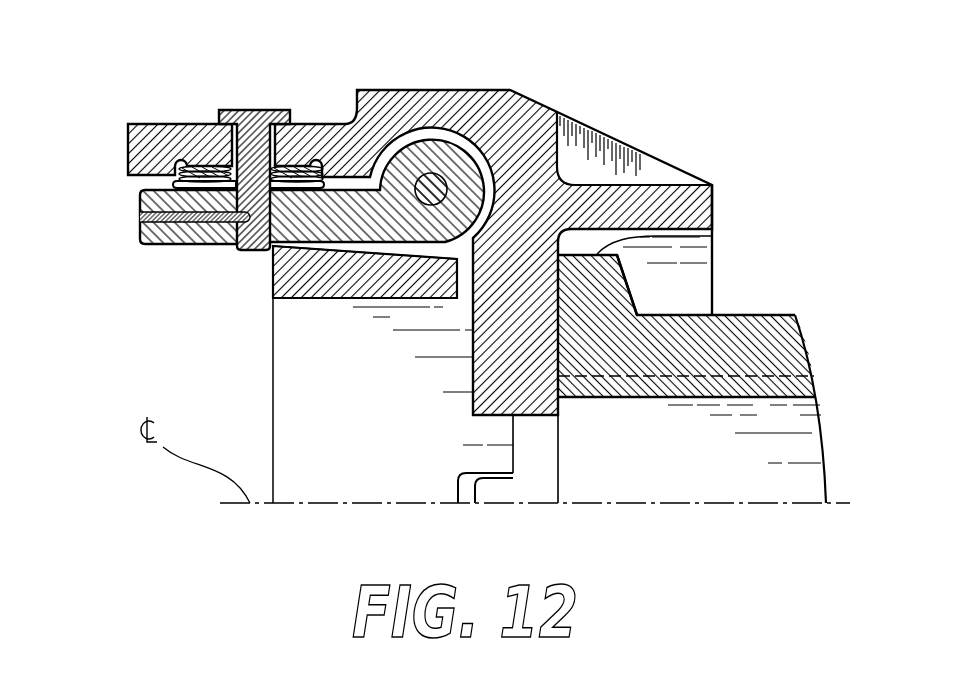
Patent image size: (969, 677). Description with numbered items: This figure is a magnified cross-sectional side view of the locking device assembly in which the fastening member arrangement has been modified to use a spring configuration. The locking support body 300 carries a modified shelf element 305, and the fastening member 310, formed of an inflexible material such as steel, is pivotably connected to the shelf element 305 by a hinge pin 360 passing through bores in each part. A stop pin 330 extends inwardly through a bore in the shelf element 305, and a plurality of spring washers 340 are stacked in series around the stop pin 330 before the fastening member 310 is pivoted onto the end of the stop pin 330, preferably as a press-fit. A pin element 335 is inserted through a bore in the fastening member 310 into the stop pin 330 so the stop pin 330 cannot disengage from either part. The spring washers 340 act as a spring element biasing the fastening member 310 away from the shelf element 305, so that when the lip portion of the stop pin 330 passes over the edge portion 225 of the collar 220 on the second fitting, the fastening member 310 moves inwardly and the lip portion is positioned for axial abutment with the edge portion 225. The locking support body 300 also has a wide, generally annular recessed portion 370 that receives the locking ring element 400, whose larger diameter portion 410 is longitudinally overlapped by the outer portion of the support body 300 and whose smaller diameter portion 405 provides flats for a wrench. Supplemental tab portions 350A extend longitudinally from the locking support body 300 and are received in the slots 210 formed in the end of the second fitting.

The locking support body 300 is at (692, 197).
The shelf element 305 is at (142, 130).
The stop pin 330 is at (247, 125).
The spring washers 340 is at (176, 184).
The fastening member 310 is at (150, 203).
The pin element 335 is at (163, 223).
The hinge pin 360 is at (430, 187).
The collar 220 is at (322, 278).
The edge portion 225 is at (268, 272).
The larger diameter portion 410 is at (683, 237).
The recessed portion 370 is at (680, 266).
The locking ring element 400 is at (762, 343).
The smaller diameter portion 405 is at (672, 313).
The supplemental tab portions 350A is at (482, 488).
The slots 210 is at (458, 490).